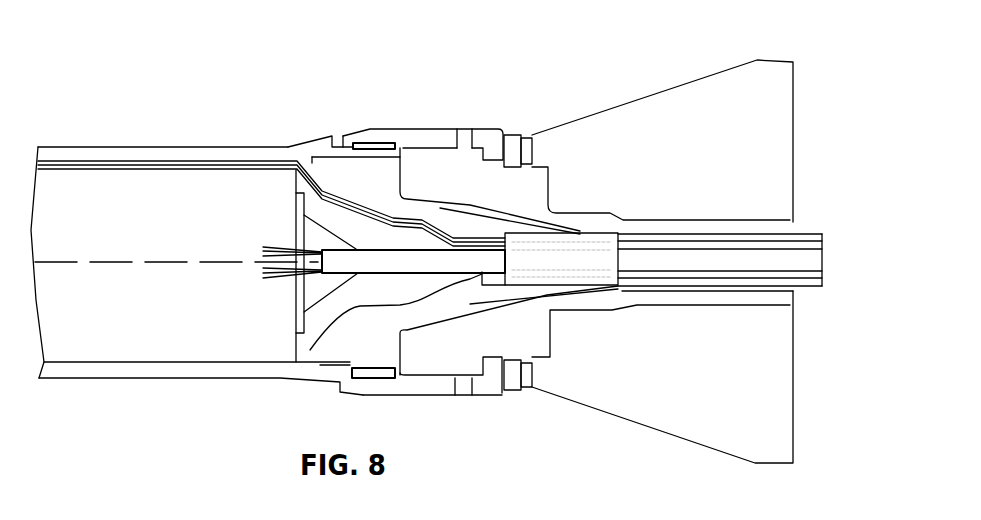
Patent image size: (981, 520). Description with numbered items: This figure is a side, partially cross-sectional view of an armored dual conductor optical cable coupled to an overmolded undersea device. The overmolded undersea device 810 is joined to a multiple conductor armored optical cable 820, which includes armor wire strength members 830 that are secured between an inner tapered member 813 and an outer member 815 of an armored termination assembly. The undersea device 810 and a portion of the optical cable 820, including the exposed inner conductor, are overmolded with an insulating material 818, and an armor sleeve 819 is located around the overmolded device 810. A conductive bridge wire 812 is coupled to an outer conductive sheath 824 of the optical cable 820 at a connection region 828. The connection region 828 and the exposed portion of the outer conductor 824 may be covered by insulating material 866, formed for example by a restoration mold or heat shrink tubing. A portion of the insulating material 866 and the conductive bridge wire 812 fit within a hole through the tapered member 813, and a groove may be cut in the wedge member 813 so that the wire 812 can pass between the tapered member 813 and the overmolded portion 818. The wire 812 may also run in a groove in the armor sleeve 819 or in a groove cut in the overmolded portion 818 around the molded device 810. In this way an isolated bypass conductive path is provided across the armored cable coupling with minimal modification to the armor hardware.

The overmolded undersea device 810 is at (114, 212).
The conductive bridge wire 812 is at (381, 222).
The inner tapered member 813 is at (325, 165).
The outer member 815 is at (415, 158).
The insulating material 818 is at (290, 180).
The armor sleeve 819 is at (160, 150).
The multiple conductor armored optical cable 820 is at (813, 221).
The outer conductive sheath 824 is at (745, 246).
The connection region 828 is at (574, 231).
The armor wire strength members 830 is at (460, 200).
The insulating material 866 is at (518, 227).